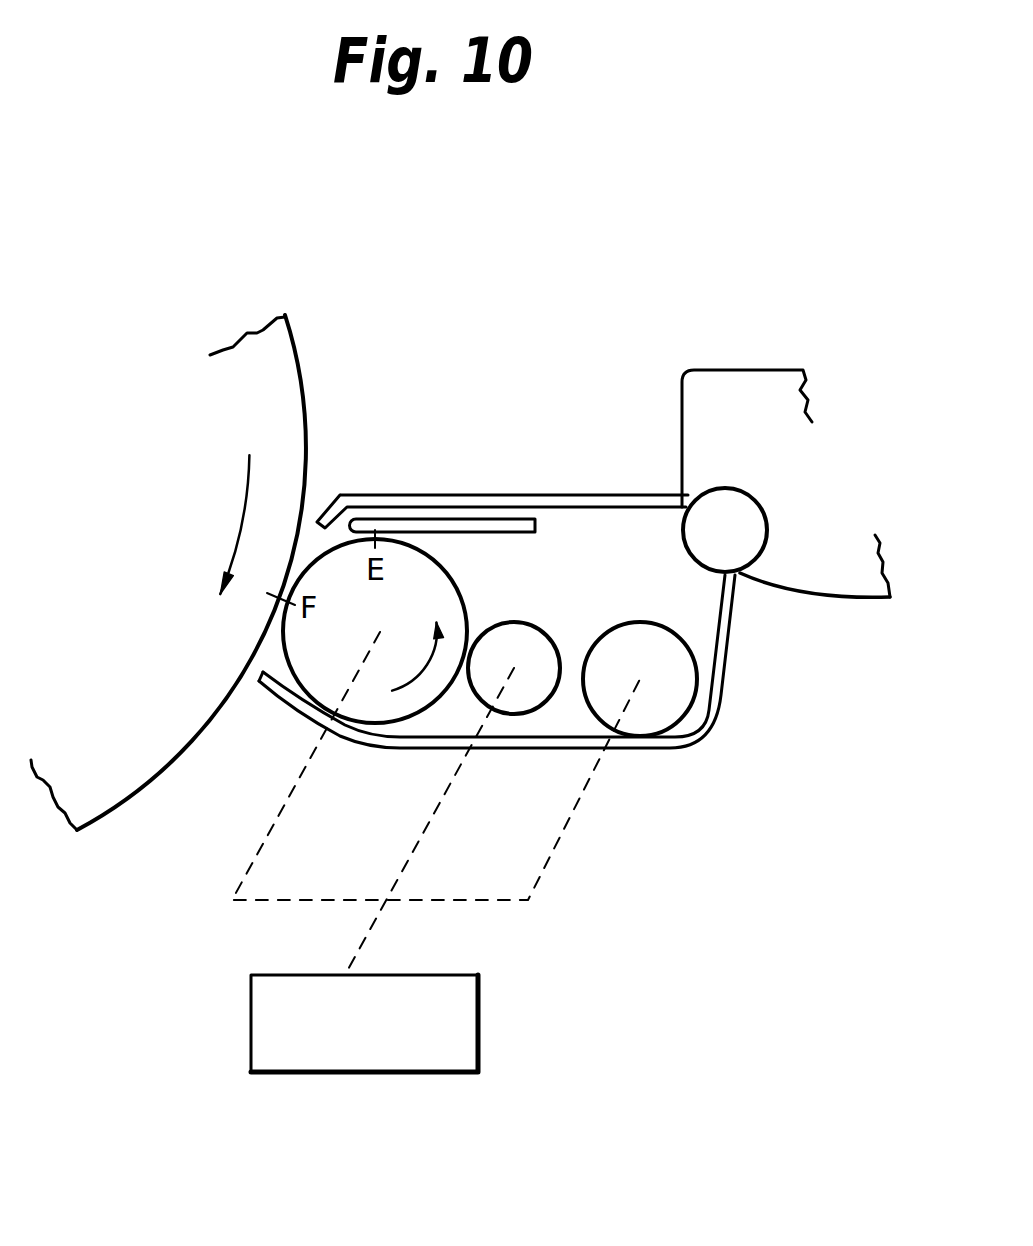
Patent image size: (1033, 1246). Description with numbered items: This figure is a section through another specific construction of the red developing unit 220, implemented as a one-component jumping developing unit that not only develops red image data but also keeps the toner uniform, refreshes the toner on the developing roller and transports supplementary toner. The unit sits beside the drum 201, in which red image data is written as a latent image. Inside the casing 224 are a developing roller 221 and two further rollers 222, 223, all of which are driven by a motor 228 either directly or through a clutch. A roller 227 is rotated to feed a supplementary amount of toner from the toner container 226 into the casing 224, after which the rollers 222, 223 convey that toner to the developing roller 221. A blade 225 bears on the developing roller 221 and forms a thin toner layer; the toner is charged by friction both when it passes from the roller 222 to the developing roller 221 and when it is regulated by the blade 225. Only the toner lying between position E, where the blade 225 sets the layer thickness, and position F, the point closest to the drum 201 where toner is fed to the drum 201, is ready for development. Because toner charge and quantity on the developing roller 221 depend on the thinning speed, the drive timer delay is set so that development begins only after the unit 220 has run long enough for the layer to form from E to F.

The drum 201 is at (298, 357).
The red developing unit 220 is at (547, 464).
The developing roller 221 is at (385, 748).
The roller 222 is at (530, 740).
The roller 223 is at (610, 741).
The casing 224 is at (718, 717).
The blade 225 is at (500, 535).
The toner container 226 is at (832, 600).
The roller 227 is at (766, 521).
The motor 228 is at (482, 1028).